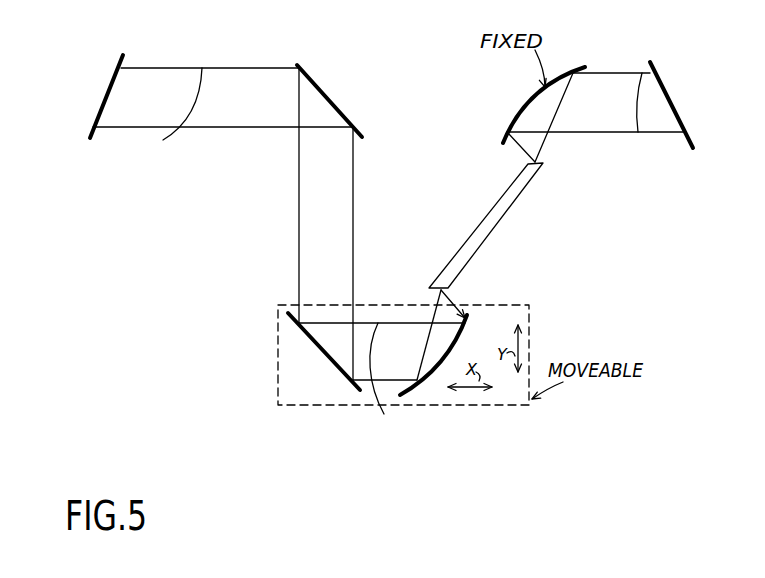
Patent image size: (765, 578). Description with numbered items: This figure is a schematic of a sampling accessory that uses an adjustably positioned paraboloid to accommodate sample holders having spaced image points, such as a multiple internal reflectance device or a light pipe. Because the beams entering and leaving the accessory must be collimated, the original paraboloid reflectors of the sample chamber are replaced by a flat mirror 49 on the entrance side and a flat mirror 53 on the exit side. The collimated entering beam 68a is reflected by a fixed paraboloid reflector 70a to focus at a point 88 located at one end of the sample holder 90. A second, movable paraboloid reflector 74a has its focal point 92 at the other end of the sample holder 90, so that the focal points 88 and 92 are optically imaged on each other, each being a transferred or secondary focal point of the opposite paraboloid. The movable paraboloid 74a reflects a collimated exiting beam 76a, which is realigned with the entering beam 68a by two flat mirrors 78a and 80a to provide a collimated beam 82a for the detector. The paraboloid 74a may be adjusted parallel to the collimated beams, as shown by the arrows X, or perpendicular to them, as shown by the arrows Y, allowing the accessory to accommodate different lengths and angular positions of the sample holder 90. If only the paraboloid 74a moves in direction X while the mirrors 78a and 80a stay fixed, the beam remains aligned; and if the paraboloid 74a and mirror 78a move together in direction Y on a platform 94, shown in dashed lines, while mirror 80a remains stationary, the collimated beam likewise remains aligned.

The flat mirror 53 is at (97, 120).
The collimated beam 82a is at (202, 128).
The flat mirror 80a is at (352, 120).
The fixed paraboloid reflector 70a is at (508, 125).
The flat mirror 49 is at (668, 92).
The collimated entering beam 68a is at (657, 135).
The focal point 88 is at (530, 162).
The sample holder 90 is at (488, 210).
The focal point 92 is at (438, 291).
The movable paraboloid reflector 74a is at (468, 330).
The platform 94 is at (278, 348).
The flat mirror 78a is at (337, 368).
The collimated exiting beam 76a is at (388, 382).